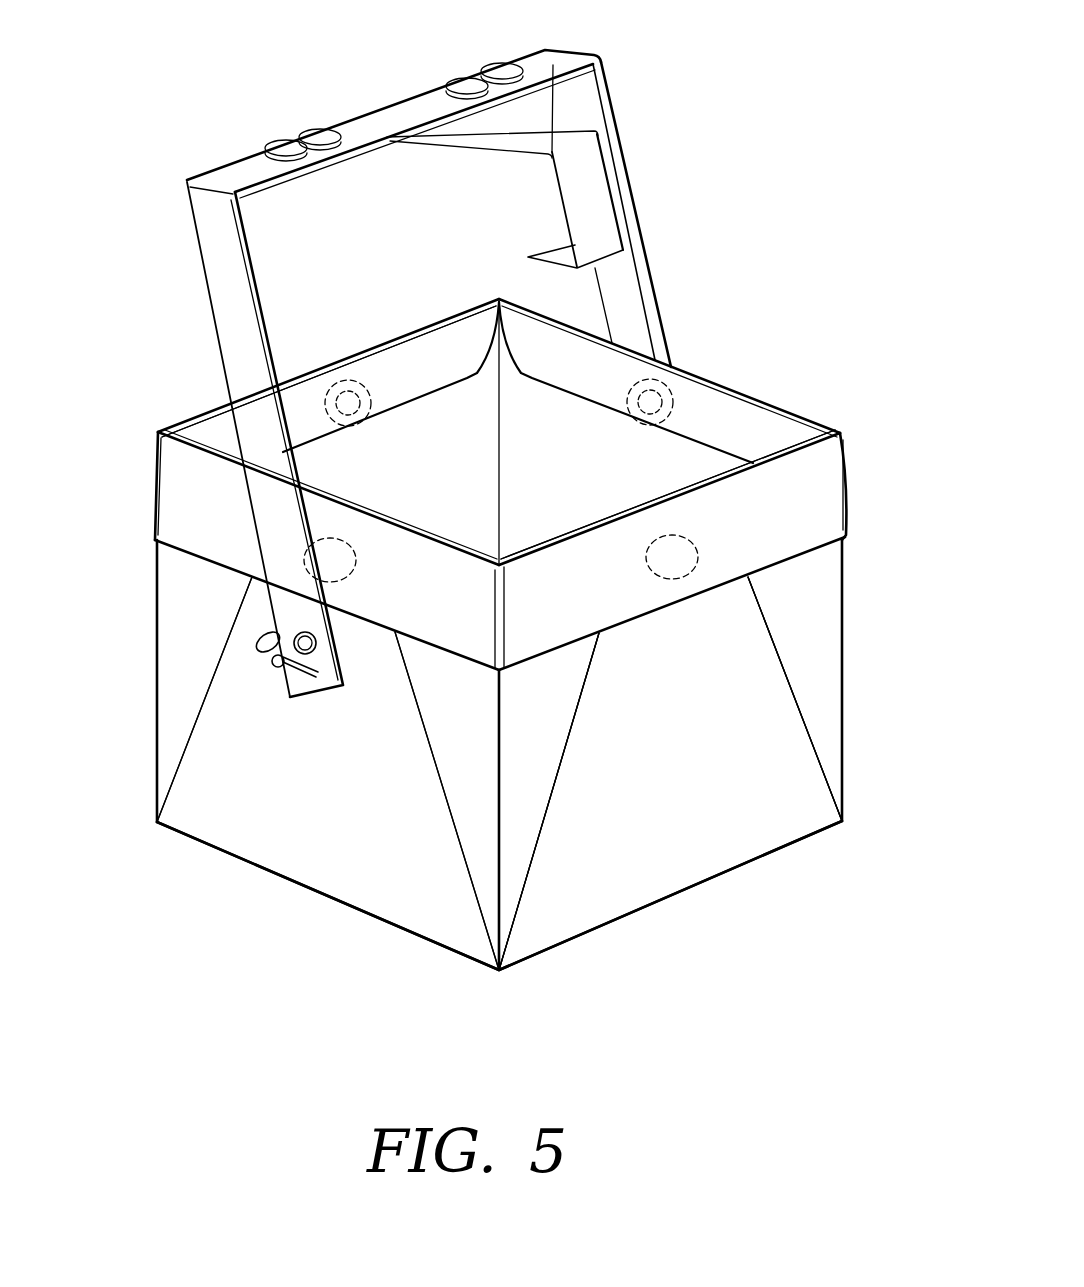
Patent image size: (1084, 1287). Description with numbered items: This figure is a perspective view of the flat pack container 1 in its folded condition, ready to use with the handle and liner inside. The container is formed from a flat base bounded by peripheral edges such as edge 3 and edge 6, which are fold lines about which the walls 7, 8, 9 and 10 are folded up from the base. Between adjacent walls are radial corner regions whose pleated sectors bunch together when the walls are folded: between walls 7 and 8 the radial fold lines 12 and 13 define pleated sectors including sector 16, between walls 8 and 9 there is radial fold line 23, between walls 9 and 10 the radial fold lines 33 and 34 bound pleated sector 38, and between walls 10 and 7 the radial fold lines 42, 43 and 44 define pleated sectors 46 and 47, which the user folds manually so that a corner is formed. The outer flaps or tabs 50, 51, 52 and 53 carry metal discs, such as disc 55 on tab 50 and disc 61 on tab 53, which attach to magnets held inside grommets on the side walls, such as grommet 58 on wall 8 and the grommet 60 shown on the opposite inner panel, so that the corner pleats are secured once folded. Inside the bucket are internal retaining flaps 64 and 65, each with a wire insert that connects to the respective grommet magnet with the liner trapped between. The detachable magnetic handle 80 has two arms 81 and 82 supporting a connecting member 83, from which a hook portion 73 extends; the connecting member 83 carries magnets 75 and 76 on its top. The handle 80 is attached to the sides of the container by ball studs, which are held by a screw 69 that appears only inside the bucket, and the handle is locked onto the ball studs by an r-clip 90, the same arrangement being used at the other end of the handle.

The flat pack container 1 is at (250, 1003).
The peripheral edge 3 is at (240, 858).
The peripheral edge 6 is at (732, 876).
The wall 7 is at (328, 773).
The wall 8 is at (328, 401).
The wall 9 is at (669, 412).
The wall 10 is at (670, 773).
The radial fold line 12 is at (190, 740).
The radial fold line 13 is at (157, 562).
The pleated sector 16 is at (168, 692).
The radial fold line 23 is at (500, 450).
The radial fold line 33 is at (845, 602).
The radial fold line 34 is at (785, 677).
The pleated sector 38 is at (832, 692).
The radial fold line 42 is at (442, 782).
The radial fold line 43 is at (500, 890).
The radial fold line 44 is at (560, 786).
The pleated sector 46 is at (530, 842).
The pleated sector 47 is at (475, 842).
The outer flap 50 is at (393, 720).
The outer flap 51 is at (423, 325).
The outer flap 52 is at (740, 387).
The outer flap 53 is at (672, 550).
The metal disc 55 is at (356, 568).
The grommet 58 is at (345, 382).
The aperture 60 is at (680, 387).
The metal disc 61 is at (697, 557).
The internal retaining flap 64 is at (458, 347).
The internal retaining flap 65 is at (777, 437).
The screw 69 is at (287, 667).
The hook portion 73 is at (603, 187).
The magnet 75 is at (297, 137).
The magnet 76 is at (478, 72).
The handle 80 is at (396, 348).
The arm 81 is at (208, 260).
The arm 82 is at (612, 95).
The connecting member 83 is at (383, 113).
The r-clip 90 is at (262, 636).